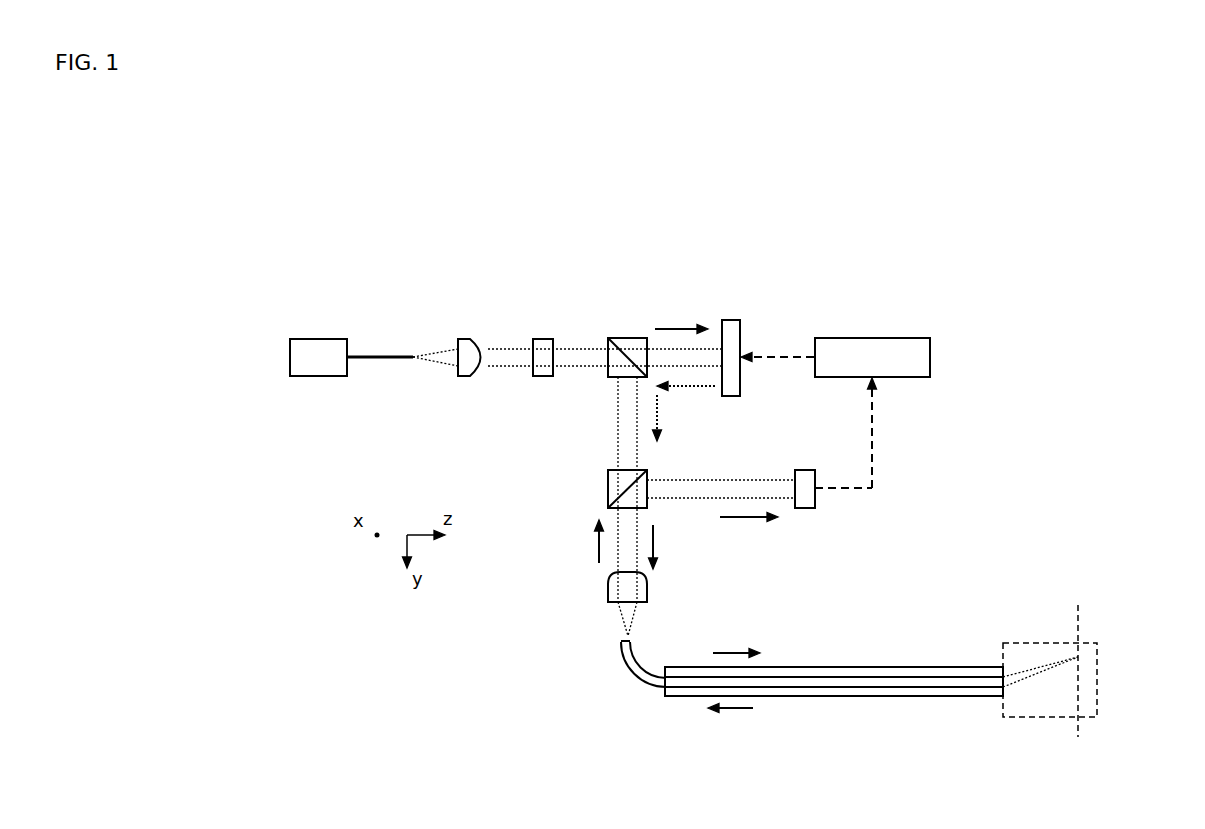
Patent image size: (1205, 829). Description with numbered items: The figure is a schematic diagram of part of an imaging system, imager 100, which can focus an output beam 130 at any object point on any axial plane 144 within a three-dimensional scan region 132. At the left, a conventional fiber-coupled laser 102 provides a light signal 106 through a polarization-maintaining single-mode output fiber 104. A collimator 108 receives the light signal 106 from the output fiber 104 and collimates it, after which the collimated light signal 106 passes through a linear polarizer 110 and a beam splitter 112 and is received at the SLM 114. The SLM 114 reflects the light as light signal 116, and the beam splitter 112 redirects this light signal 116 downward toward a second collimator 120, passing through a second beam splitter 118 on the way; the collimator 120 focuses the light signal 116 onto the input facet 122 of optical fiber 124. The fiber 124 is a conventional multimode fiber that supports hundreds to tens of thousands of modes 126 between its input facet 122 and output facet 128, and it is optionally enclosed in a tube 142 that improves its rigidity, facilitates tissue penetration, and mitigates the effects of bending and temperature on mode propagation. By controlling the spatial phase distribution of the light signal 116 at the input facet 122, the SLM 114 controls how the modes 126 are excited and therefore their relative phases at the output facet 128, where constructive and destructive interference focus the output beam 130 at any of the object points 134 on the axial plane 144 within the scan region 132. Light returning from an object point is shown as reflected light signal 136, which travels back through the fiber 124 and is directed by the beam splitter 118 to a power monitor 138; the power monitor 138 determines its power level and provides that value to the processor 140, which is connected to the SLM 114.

The imager 100 is at (273, 223).
The laser 102 is at (303, 378).
The output fiber 104 is at (385, 356).
The light signal 106 is at (418, 371).
The collimator 108 is at (460, 378).
The linear polarizer 110 is at (538, 378).
The beam splitter 112 is at (625, 338).
The SLM 114 is at (735, 320).
The light signal 116 is at (659, 412).
The beam splitter 118 is at (608, 488).
The collimator 120 is at (608, 592).
The input facet 122 is at (641, 627).
The optical fiber 124 is at (800, 680).
The modes 126 is at (861, 690).
The output facet 128 is at (1013, 698).
The output beam 130 is at (1014, 654).
The scan region 132 is at (1085, 643).
The object points 134 is at (1097, 710).
The reflected light signal 136 is at (598, 547).
The power monitor 138 is at (810, 470).
The processor 140 is at (870, 338).
The tube 142 is at (947, 697).
The axial plane 144 is at (1077, 623).